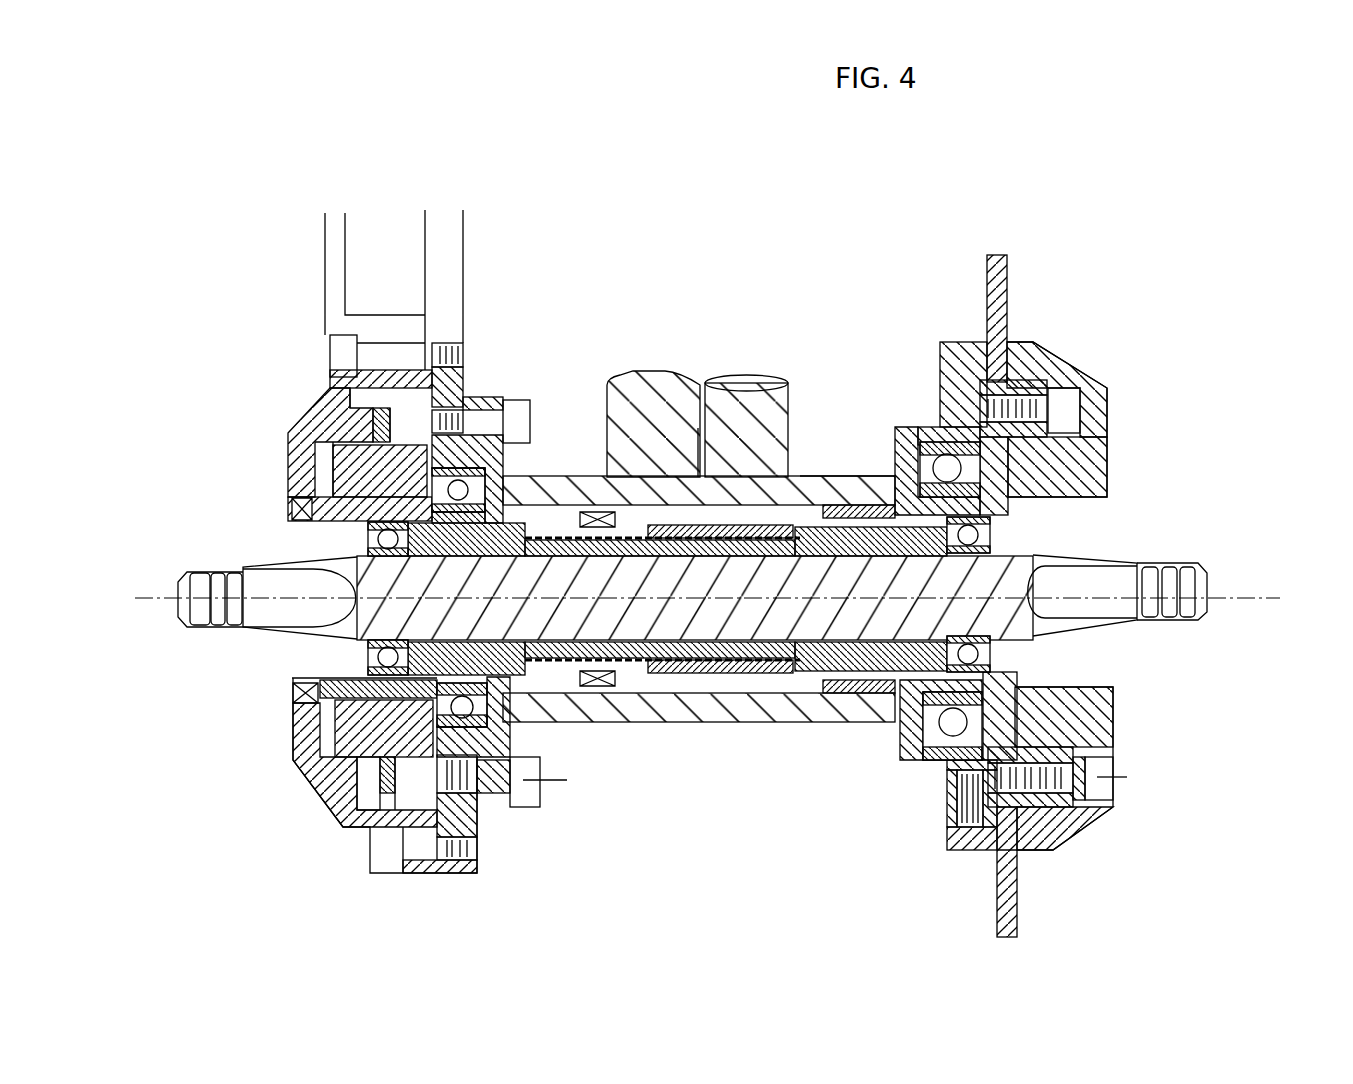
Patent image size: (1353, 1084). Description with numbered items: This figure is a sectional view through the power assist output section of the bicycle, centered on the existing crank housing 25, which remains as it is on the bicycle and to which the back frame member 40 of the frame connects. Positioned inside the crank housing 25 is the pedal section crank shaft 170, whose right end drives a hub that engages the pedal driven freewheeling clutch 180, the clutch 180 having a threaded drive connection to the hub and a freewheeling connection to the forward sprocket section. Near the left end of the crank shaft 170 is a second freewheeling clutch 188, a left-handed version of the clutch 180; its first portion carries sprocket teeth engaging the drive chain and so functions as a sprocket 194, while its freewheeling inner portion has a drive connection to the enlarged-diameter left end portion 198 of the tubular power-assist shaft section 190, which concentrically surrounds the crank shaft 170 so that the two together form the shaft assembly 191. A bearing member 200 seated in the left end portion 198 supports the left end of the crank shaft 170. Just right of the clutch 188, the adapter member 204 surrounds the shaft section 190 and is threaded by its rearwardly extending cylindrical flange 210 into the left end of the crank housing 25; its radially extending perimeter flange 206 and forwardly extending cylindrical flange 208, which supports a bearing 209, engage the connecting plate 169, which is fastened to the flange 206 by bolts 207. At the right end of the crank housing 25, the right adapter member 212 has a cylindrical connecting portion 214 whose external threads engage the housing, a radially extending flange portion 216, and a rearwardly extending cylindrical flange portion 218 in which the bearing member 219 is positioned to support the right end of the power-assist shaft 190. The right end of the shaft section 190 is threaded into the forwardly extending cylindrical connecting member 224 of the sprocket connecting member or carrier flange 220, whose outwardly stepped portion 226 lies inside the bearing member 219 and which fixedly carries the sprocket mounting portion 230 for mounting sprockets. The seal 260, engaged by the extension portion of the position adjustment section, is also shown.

The connecting plate 169 is at (453, 250).
The perimeter flange 206 is at (480, 397).
The forwardly extending cylindrical flange 208 is at (468, 445).
The adapter member 204 is at (560, 423).
The crank housing 25 is at (553, 492).
The back frame member 40 is at (746, 407).
The sprocket 194 is at (348, 412).
The second freewheeling clutch 188 is at (347, 475).
The bearing 209 is at (455, 490).
The left end portion of the power-assist shaft 198 is at (393, 520).
The bearing member 200 is at (392, 543).
The right adapter member 212 is at (898, 425).
The rearwardly extending cylindrical flange portion 218 is at (920, 425).
The bearing member 219 is at (977, 303).
The radially extending flange portion 216 is at (897, 442).
The cylindrical connecting portion 214 is at (845, 490).
The sprocket mounting portion 230 is at (1033, 343).
The pedal driven freewheeling clutch 180 is at (1107, 467).
The outwardly stepped portion 226 is at (950, 672).
The sprocket connecting member 220 is at (1020, 677).
The rearwardly extending cylindrical flange 210 is at (570, 697).
The seal 260 is at (605, 690).
The pedal section crank shaft 170 is at (687, 625).
The power-assist shaft section 190 is at (703, 760).
The shaft assembly 191 is at (737, 660).
The forwardly extending cylindrical connecting member 224 is at (852, 690).
The bolts 207 is at (523, 850).